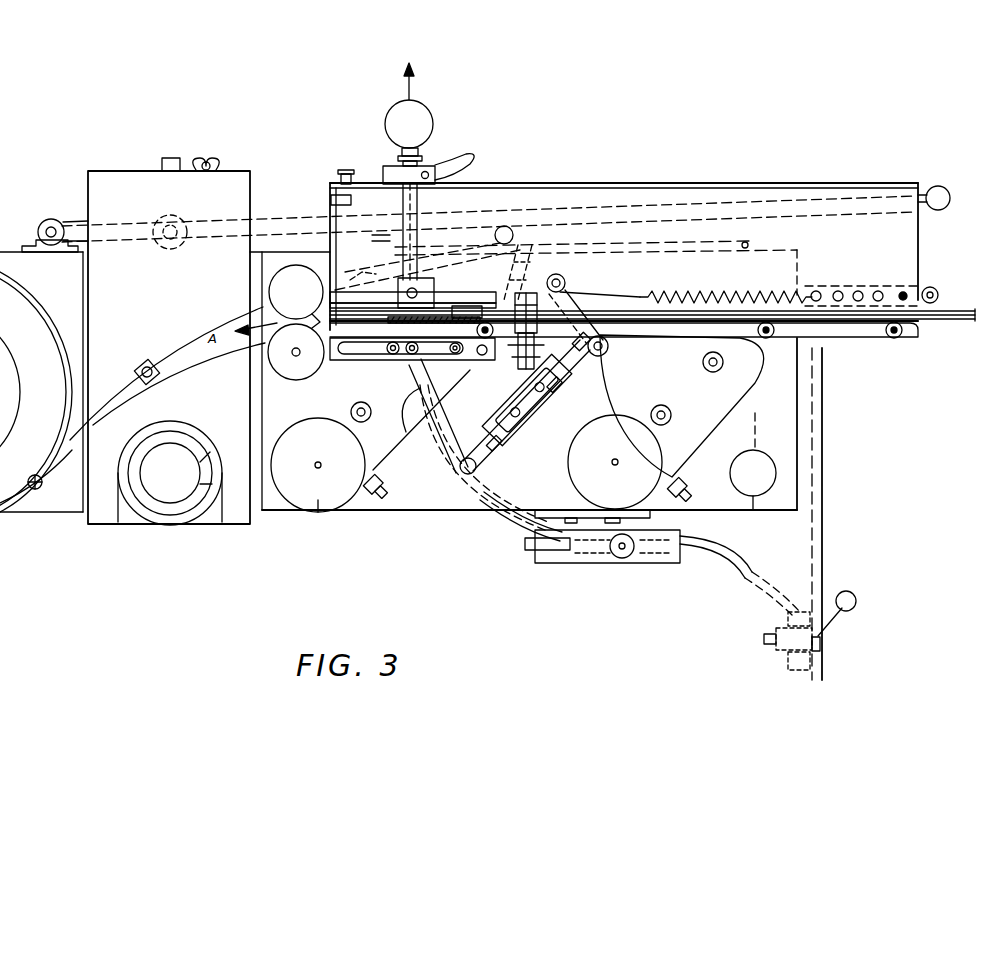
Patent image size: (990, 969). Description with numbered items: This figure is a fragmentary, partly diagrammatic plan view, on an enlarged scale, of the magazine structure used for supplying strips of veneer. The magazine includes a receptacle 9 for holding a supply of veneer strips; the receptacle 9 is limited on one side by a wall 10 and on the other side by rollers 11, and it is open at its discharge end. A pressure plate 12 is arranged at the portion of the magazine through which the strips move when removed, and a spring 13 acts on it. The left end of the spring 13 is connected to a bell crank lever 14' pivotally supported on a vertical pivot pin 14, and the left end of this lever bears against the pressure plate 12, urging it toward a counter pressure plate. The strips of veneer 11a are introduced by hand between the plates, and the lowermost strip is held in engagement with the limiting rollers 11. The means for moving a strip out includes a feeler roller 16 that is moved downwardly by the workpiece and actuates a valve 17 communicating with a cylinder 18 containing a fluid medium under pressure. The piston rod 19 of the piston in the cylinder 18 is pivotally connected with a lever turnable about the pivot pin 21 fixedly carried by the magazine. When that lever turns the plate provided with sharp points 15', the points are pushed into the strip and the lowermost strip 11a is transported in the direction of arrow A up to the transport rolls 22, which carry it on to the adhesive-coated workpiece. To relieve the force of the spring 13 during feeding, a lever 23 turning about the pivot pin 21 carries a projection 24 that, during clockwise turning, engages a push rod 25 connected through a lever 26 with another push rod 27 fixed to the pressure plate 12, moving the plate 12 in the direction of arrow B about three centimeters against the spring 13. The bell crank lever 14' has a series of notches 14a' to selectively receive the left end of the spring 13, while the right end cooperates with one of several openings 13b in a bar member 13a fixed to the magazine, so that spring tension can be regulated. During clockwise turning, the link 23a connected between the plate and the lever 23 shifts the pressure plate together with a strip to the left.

The receptacle 9 is at (785, 220).
The wall 10 is at (681, 183).
The rollers 11 is at (895, 338).
The strips of veneer 11a is at (948, 318).
The pressure plate 12 is at (440, 303).
The spring 13 is at (705, 294).
The bar member 13a is at (928, 286).
The openings 13b is at (840, 290).
The vertical pivot pin 14 is at (517, 196).
The bell crank lever 14' is at (427, 266).
The notches 14a' is at (526, 260).
The sharp points 15' is at (412, 365).
The roller 16 is at (532, 551).
The valve 17 is at (626, 562).
The cylinder 18 is at (496, 340).
The piston rod 19 is at (556, 272).
The pivot pin 21 is at (598, 356).
The transport rolls 22 is at (282, 278).
The lever 23 is at (530, 440).
The link 23a is at (450, 440).
The projection 24 is at (520, 394).
The push rod 25 is at (532, 348).
The lever 26 is at (643, 245).
The push rod 27 is at (403, 180).